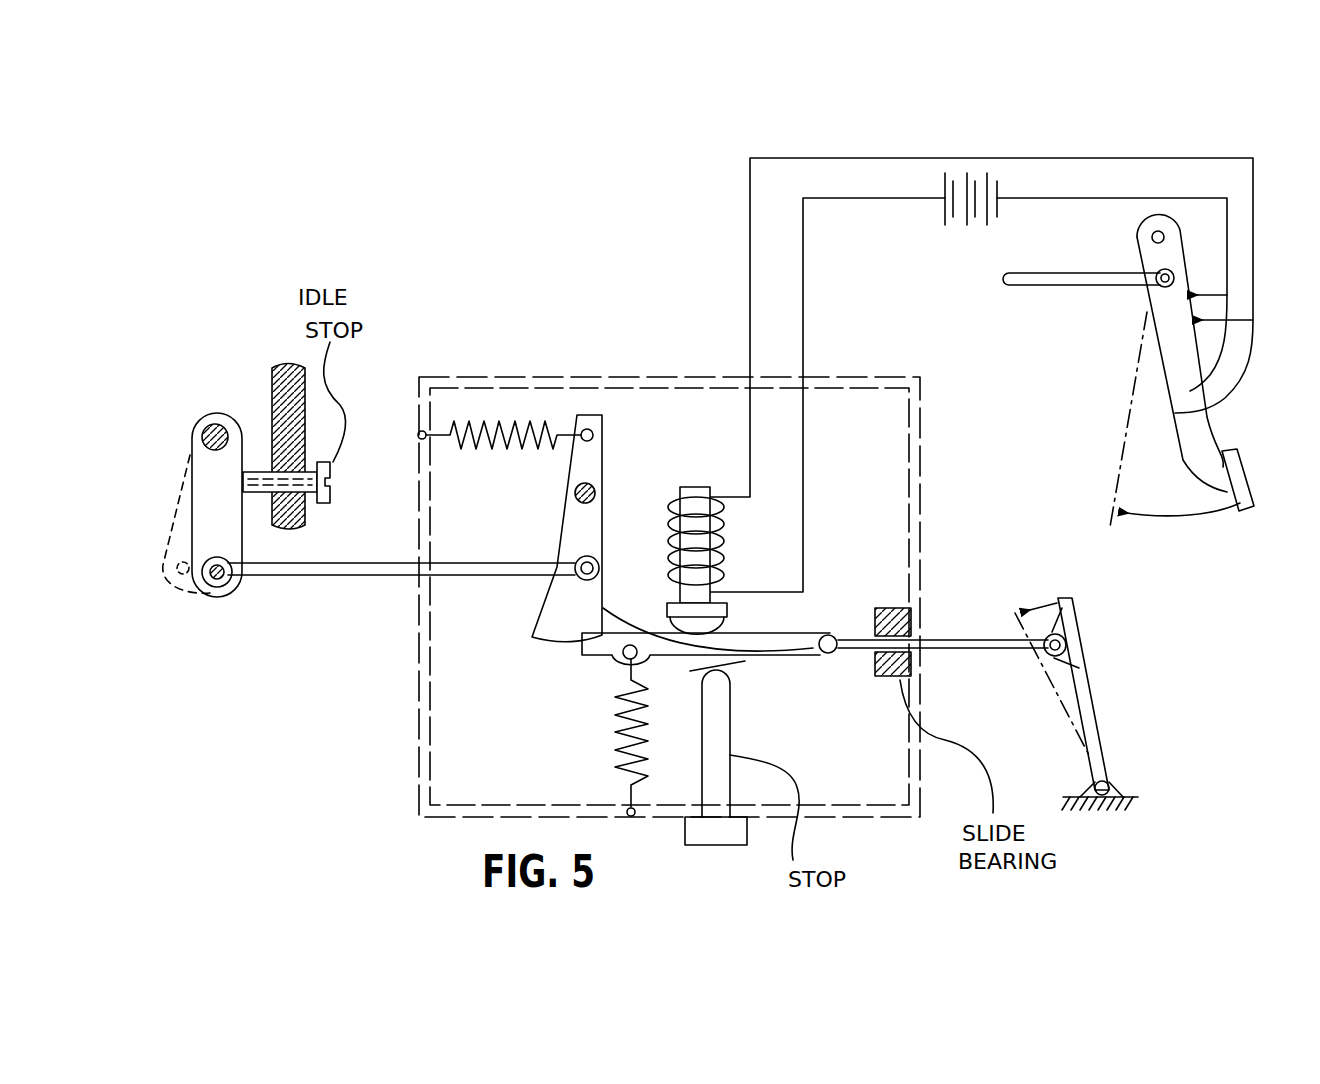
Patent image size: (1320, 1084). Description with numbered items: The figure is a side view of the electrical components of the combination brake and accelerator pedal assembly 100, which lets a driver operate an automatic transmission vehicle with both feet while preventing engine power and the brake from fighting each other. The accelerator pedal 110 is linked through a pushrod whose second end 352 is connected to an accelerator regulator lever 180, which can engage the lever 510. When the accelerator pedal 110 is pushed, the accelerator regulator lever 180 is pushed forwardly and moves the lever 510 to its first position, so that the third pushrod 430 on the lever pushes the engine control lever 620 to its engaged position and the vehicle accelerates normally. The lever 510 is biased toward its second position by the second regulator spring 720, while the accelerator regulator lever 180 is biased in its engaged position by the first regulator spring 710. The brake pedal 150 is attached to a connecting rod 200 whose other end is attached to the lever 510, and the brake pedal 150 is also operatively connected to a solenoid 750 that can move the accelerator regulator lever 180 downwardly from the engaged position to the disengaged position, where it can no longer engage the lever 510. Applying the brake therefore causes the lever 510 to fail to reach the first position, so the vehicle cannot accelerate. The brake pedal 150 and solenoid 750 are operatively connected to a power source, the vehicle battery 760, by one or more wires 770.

The brake pedal and accelerator pedal assembly 100 is at (667, 268).
The accelerator pedal 110 is at (1107, 753).
The brake pedal 150 is at (1180, 458).
The accelerator regulator lever 180 is at (805, 656).
The connecting rod 200 is at (1032, 292).
The second end of first pushrod 352 is at (847, 637).
The third pushrod 430 is at (342, 577).
The lever 510 is at (577, 533).
The engine control lever 620 is at (187, 453).
The first regulator spring 710 is at (617, 725).
The second regulator spring 720 is at (495, 422).
The solenoid 750 is at (677, 513).
The battery 760 is at (943, 187).
The wire 770 is at (1180, 392).